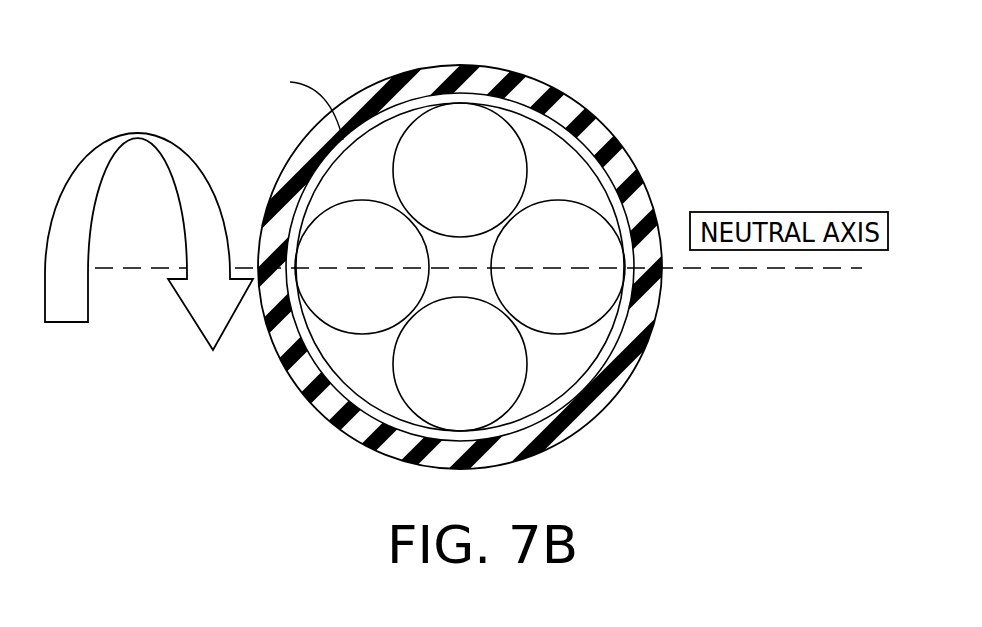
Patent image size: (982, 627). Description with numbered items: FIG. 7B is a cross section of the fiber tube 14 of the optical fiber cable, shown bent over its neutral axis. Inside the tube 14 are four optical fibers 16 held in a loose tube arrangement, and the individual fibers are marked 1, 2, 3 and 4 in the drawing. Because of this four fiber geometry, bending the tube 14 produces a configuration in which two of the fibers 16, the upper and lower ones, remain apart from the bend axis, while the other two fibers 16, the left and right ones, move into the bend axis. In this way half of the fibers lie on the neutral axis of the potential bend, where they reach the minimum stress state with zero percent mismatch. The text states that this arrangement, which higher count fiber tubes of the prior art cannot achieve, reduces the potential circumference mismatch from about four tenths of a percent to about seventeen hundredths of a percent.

The fiber tube 14 is at (555, 91).
The optical fibers 16 is at (606, 236).
The conductor 1 is at (460, 364).
The conductor 2 is at (362, 267).
The conductor 3 is at (460, 170).
The conductor 4 is at (558, 267).